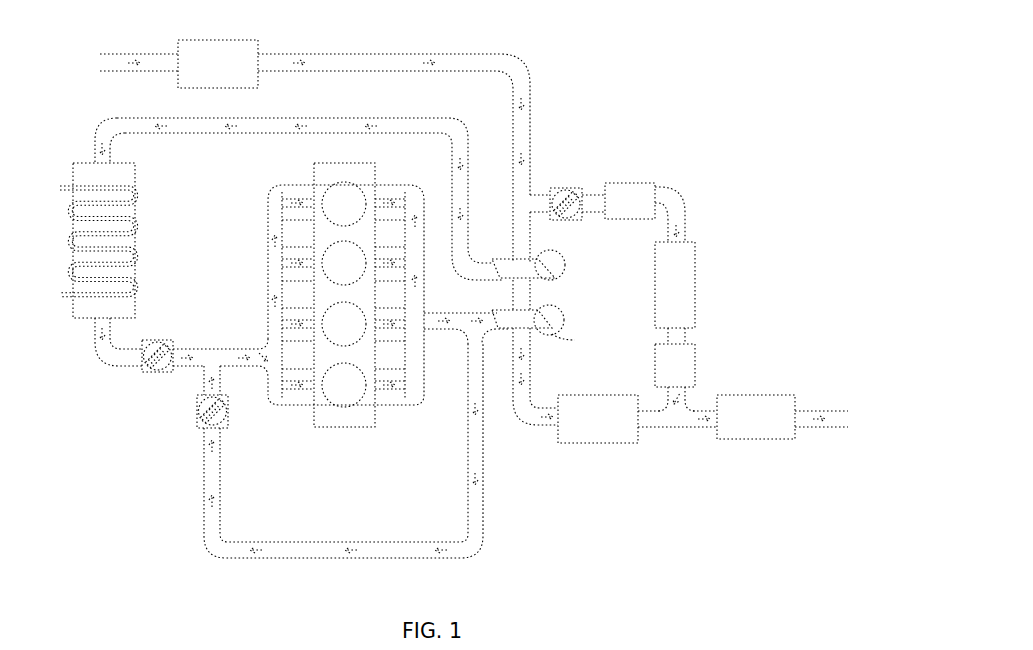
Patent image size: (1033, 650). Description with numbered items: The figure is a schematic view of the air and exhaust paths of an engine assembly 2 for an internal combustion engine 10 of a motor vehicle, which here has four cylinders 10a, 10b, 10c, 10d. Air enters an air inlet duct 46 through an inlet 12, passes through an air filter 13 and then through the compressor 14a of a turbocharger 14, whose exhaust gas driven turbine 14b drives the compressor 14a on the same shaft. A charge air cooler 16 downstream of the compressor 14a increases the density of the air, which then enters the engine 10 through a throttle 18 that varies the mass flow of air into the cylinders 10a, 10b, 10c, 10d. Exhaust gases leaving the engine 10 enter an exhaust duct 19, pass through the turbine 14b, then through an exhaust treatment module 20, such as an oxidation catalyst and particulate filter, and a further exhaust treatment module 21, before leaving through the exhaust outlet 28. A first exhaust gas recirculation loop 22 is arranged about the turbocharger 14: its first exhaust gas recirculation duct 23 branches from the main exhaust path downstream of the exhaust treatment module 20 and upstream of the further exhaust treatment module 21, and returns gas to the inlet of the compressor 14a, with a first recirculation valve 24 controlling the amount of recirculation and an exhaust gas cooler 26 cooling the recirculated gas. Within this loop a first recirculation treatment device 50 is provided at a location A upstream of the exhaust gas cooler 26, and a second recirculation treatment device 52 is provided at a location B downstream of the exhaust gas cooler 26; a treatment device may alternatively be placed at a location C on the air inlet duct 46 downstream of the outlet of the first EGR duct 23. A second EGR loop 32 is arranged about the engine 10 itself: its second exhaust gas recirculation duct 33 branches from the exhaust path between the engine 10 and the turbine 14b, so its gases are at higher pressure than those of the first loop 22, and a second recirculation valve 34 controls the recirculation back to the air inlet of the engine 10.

The engine assembly 2 is at (629, 67).
The internal combustion engine 10 is at (382, 322).
The cylinder 10a is at (344, 385).
The cylinder 10b is at (344, 324).
The cylinder 10c is at (344, 263).
The cylinder 10d is at (344, 204).
The inlet 12 is at (100, 62).
The air filter 13 is at (186, 77).
The turbocharger 14 is at (561, 295).
The compressor 14a is at (543, 265).
The turbine 14b is at (543, 322).
The charge air cooler 16 is at (126, 184).
The throttle 18 is at (151, 341).
The exhaust duct 19 is at (522, 418).
The exhaust treatment module 20 is at (595, 428).
The further exhaust treatment module 21 is at (757, 428).
The first exhaust gas recirculation loop 22 is at (681, 206).
The first exhaust gas recirculation duct 23 is at (541, 195).
The first recirculation valve 24 is at (583, 193).
The exhaust gas cooler 26 is at (697, 277).
The exhaust outlet 28 is at (847, 420).
The second EGR loop 32 is at (288, 546).
The second exhaust gas recirculation duct 33 is at (222, 446).
The second recirculation valve 34 is at (197, 419).
The air inlet duct 46 is at (358, 54).
The first recirculation treatment device 50 is at (696, 355).
The second recirculation treatment device 52 is at (633, 183).
The location A is at (628, 200).
The location B is at (678, 357).
The location C is at (515, 241).